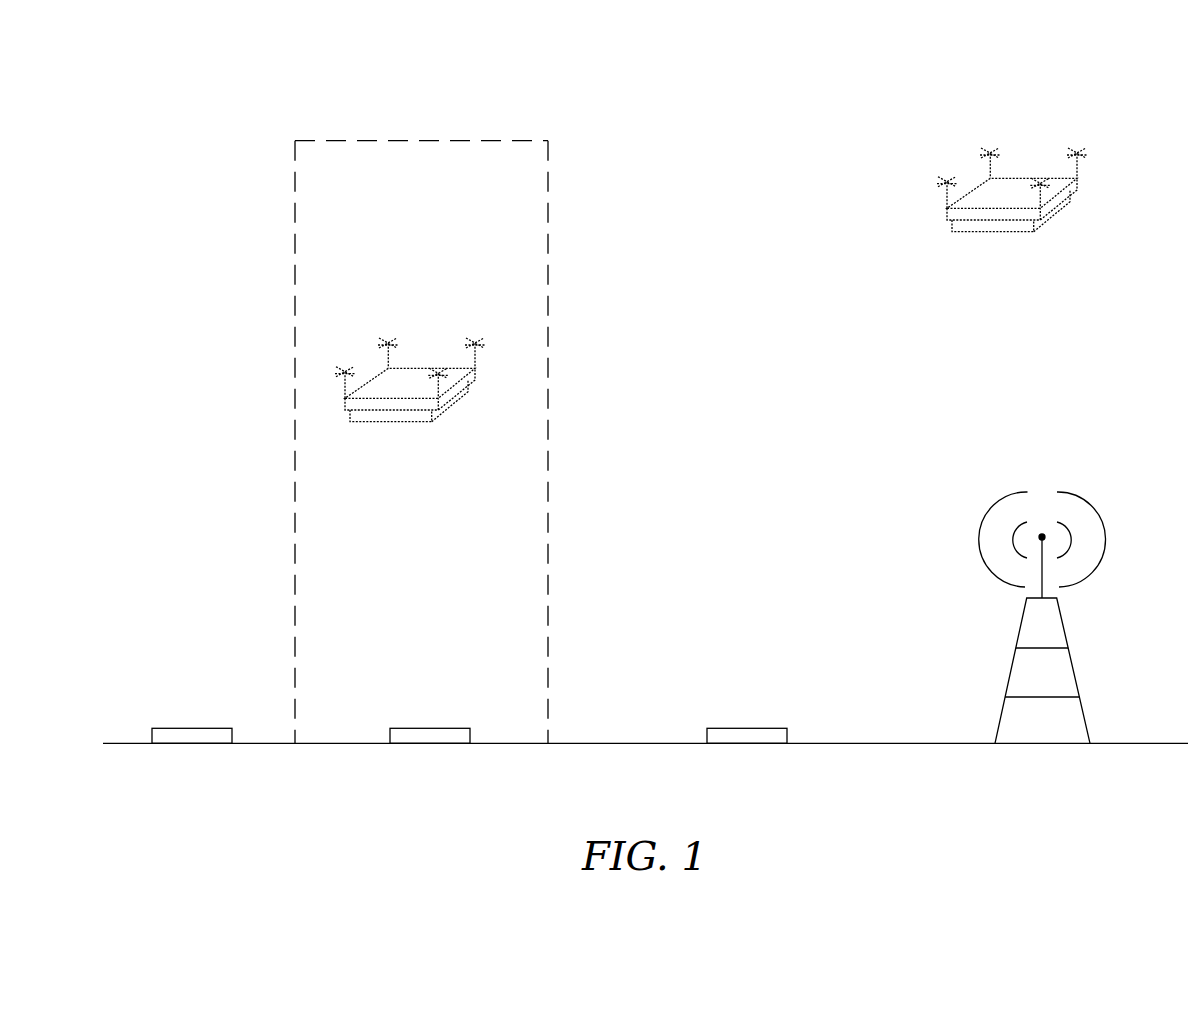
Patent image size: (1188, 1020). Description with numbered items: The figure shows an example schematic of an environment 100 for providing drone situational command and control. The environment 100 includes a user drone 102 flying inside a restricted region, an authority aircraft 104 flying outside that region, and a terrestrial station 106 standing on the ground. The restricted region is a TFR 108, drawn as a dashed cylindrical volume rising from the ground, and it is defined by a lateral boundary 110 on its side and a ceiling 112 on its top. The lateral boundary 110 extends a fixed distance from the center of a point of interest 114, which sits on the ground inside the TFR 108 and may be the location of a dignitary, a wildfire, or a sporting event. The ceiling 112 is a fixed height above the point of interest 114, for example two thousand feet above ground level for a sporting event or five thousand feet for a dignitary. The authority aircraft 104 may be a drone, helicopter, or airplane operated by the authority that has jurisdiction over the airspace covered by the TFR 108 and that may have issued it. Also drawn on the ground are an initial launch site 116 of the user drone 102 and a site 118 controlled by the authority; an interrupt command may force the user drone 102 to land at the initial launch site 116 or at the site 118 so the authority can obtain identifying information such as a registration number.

The environment 100 is at (1082, 58).
The user drone 102 is at (407, 423).
The authority aircraft 104 is at (978, 230).
The terrestrial station 106 is at (1008, 677).
The TFR 108 is at (546, 104).
The lateral boundary 110 is at (295, 268).
The ceiling 112 is at (405, 140).
The point of interest 114 is at (422, 727).
The initial launch site 116 is at (200, 727).
The site controlled by the authority 118 is at (755, 727).